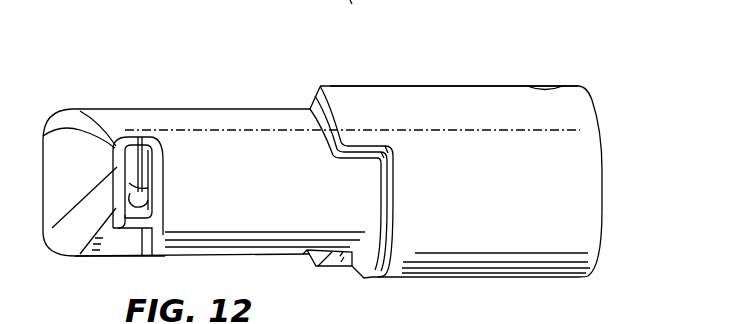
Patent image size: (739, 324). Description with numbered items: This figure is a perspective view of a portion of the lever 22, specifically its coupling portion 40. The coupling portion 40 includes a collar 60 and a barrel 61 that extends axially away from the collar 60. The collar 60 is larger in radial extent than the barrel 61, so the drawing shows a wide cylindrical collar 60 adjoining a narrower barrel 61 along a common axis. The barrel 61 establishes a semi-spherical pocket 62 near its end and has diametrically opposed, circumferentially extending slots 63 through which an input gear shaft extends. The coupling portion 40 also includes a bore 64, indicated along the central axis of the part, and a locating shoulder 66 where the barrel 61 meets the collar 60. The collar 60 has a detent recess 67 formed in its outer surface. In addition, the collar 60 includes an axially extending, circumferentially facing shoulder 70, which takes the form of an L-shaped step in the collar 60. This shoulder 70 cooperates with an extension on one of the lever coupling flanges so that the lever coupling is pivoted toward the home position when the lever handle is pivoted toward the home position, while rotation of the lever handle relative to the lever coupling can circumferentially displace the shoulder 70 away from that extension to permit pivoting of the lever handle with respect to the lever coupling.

The lever 22 is at (618, 80).
The coupling portion 40 is at (142, 28).
The collar 60 is at (459, 90).
The barrel 61 is at (213, 108).
The semi-spherical pocket 62 is at (128, 188).
The slots 63 is at (188, 211).
The bore 64 is at (290, 138).
The locating shoulder 66 is at (313, 97).
The detent recess 67 is at (545, 90).
The shoulder 70 is at (357, 154).